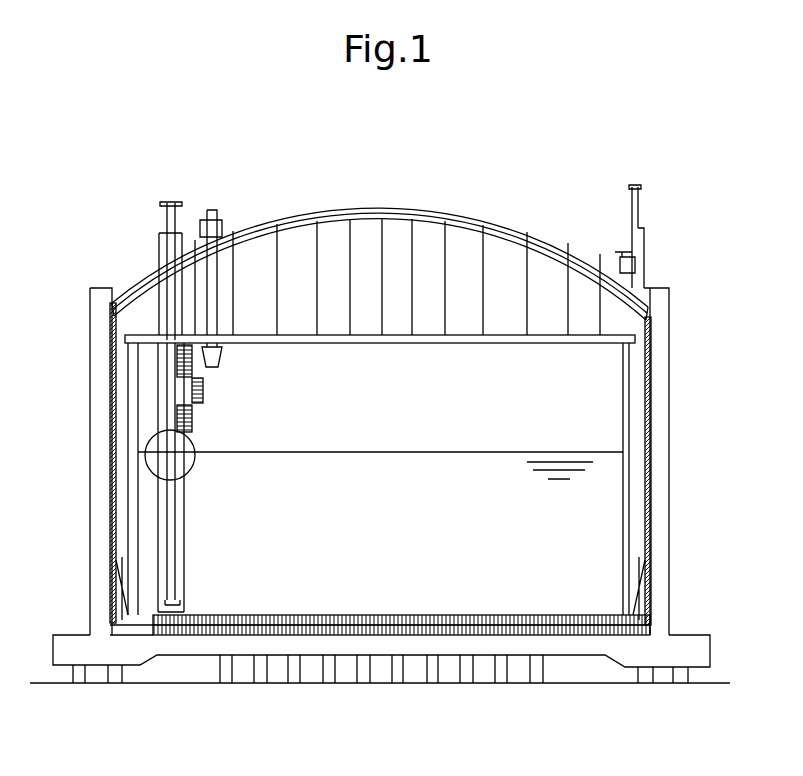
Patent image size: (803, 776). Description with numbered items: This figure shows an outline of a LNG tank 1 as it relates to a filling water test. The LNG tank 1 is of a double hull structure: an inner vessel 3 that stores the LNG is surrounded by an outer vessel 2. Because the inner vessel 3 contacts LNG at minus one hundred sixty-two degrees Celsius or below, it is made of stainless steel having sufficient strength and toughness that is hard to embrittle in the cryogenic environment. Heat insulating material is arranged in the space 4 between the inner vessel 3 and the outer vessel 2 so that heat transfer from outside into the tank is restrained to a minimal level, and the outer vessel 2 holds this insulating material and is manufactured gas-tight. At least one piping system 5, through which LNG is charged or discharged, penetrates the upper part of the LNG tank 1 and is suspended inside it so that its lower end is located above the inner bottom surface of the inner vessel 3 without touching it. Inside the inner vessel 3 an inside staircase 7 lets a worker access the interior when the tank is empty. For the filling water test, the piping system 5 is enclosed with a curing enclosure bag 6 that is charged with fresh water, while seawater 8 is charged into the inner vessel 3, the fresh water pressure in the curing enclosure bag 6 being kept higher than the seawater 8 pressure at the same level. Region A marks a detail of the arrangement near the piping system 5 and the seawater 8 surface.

The LNG tank 1 is at (130, 262).
The outer vessel 2 is at (650, 403).
The inner vessel 3 is at (632, 532).
The space 4 is at (637, 469).
The piping system 5 is at (167, 378).
The curing enclosure bag 6 is at (187, 575).
The inside staircase 7 is at (207, 402).
The seawater 8 is at (421, 467).
The detail region A is at (197, 465).